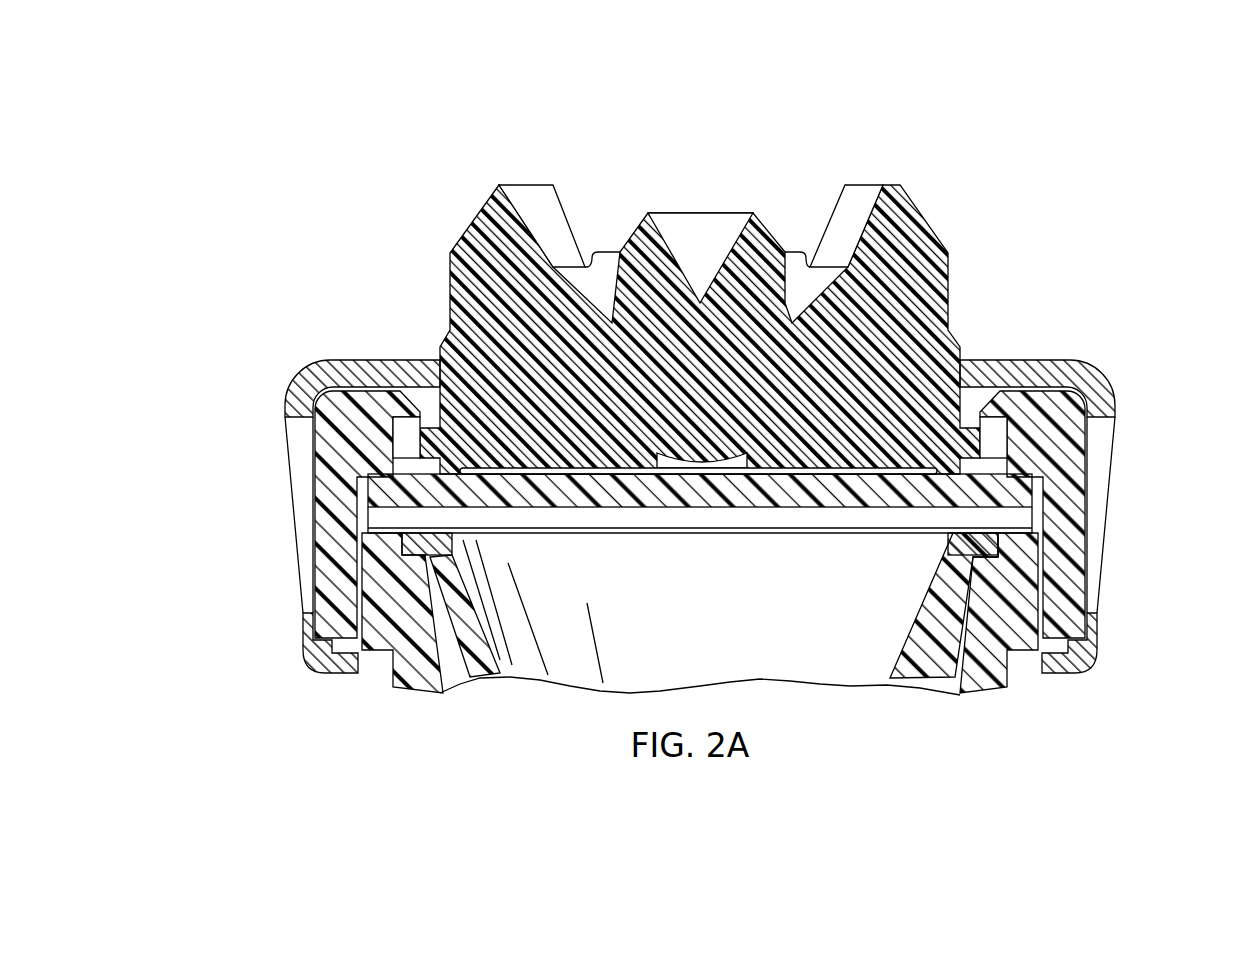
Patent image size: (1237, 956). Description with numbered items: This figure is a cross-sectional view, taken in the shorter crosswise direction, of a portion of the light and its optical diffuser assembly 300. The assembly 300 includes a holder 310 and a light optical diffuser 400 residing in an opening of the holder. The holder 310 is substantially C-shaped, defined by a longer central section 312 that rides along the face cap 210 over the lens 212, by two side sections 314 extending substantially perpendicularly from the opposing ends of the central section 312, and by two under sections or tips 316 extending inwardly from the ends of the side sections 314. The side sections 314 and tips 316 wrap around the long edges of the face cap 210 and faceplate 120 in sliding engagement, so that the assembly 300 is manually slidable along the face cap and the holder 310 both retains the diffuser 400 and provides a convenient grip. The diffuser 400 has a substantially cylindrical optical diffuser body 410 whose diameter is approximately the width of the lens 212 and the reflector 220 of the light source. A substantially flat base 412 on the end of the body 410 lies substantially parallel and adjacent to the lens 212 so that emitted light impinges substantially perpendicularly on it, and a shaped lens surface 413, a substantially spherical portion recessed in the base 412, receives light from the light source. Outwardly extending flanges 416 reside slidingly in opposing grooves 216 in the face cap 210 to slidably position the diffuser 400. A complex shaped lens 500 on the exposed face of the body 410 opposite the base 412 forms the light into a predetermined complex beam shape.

The optical diffuser assembly 300 is at (972, 160).
The light optical diffuser 400 is at (443, 286).
The optical diffuser body 410 is at (925, 367).
The complex shaped lens 500 is at (688, 193).
The holder 310 is at (707, 519).
The central section 312 is at (370, 360).
The side sections 314 is at (297, 513).
The under sections or tips 316 is at (342, 677).
The grooves or slots 216 is at (350, 410).
The flanges 416 is at (390, 440).
The lens 212 is at (832, 505).
The base 412 is at (547, 470).
The shaped lens surface 413 is at (753, 470).
The faceplate or face cap 120 is at (418, 687).
The reflector 220 is at (745, 642).
The face cap 210 is at (1098, 556).